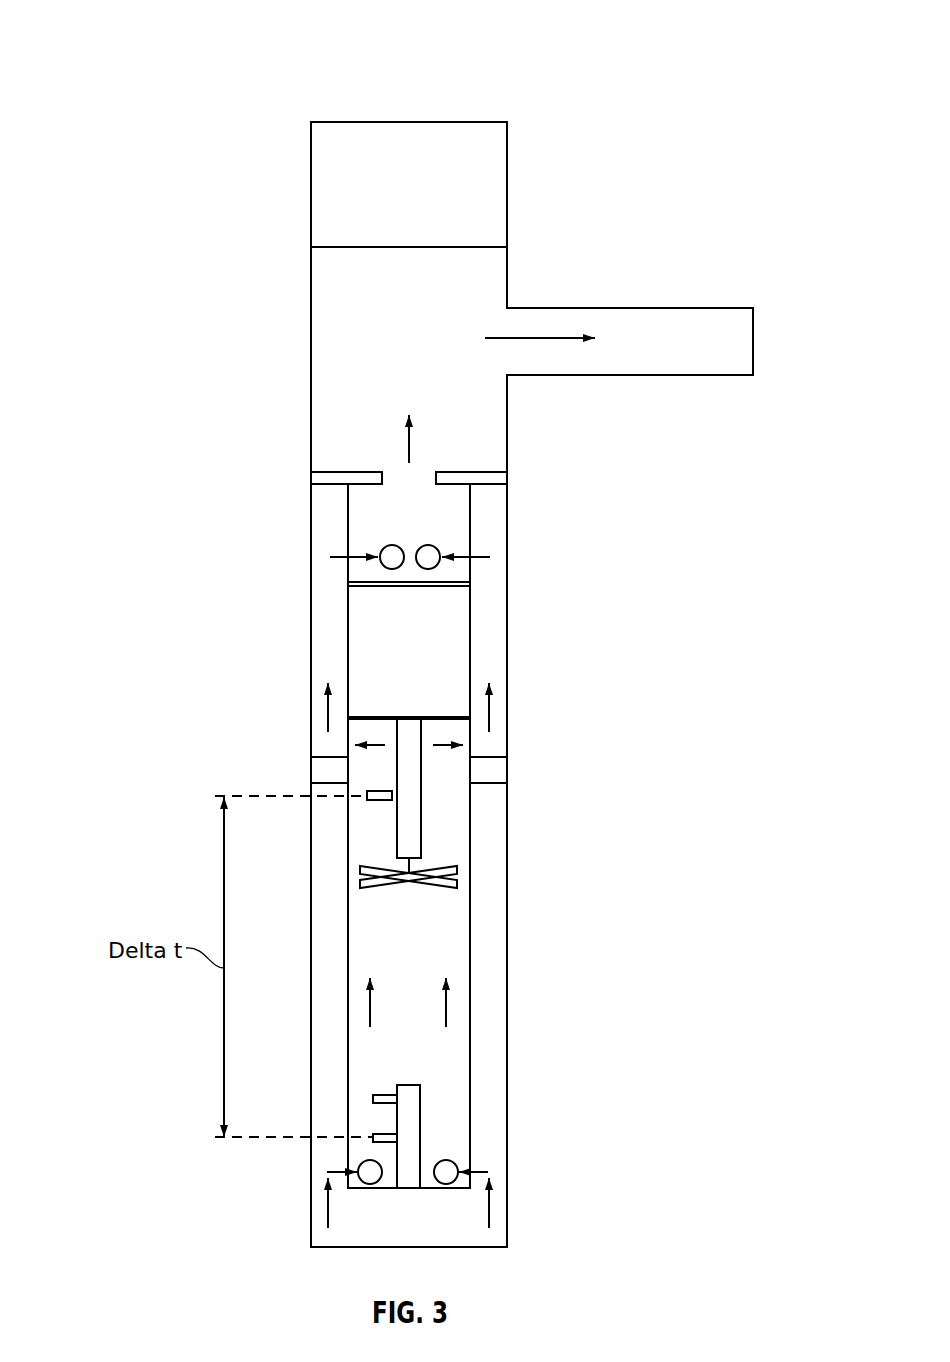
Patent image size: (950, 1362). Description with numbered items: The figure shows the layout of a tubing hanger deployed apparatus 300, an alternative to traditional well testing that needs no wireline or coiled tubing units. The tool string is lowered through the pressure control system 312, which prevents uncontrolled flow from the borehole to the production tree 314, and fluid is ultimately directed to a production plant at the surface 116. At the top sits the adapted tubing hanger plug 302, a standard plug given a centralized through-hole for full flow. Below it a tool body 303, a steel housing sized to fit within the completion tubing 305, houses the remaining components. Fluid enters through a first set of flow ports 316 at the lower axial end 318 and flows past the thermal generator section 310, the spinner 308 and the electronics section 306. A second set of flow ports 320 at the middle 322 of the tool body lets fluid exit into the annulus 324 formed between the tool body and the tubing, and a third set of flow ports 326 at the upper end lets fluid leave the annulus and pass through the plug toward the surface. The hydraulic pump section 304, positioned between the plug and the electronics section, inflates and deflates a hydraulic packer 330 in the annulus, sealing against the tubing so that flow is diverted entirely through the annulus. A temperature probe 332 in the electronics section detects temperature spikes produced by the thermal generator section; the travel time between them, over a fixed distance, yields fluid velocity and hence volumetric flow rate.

The tubing hanger deployed apparatus 300 is at (124, 62).
The pressure control system 312 is at (311, 183).
The production tree 314 is at (311, 355).
The surface 116 is at (743, 345).
The adapted tubing hanger plug 302 is at (507, 477).
The tool body 303 is at (348, 532).
The third set of flow ports 326 is at (507, 557).
The hydraulic pump section 304 is at (470, 652).
The completion tubing 305 is at (311, 612).
The annulus 324 is at (318, 668).
The middle 322 is at (507, 722).
The second set of flow ports 320 is at (330, 747).
The hydraulic packer 330 is at (507, 775).
The electronics section 306 is at (421, 808).
The spinner 308 is at (460, 877).
The temperature probe 332 is at (367, 796).
The thermal generator section 310 is at (437, 1131).
The first set of flow ports 316 is at (316, 1168).
The lower axial end 318 is at (499, 1204).